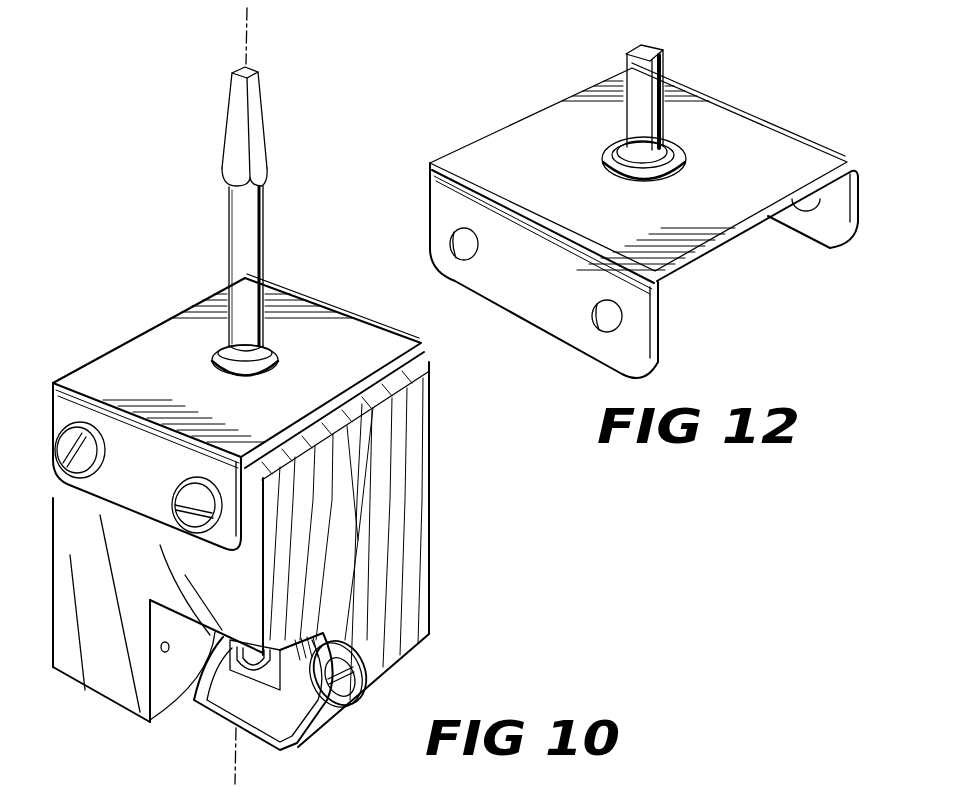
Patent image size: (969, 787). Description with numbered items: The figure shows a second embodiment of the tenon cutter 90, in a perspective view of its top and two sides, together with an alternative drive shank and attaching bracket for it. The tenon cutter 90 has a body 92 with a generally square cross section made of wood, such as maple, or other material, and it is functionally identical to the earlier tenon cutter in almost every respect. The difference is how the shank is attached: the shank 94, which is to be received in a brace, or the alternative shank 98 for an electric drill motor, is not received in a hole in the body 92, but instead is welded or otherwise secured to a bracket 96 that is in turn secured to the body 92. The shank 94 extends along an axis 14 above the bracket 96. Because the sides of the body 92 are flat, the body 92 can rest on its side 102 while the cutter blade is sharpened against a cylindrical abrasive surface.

In FIG. 10, the centerline / axis 14 is at (245, 60).
In FIG. 10, the tenon cutter 90 is at (145, 231).
In FIG. 10, the shank 94 is at (233, 127).
In FIG. 10, the bracket 96 is at (295, 317).
In FIG. 12, the bracket 96 is at (522, 130).
In FIG. 12, the shank 98 is at (640, 50).
In FIG. 10, the body 92 is at (432, 456).
In FIG. 10, the side 102 is at (400, 590).